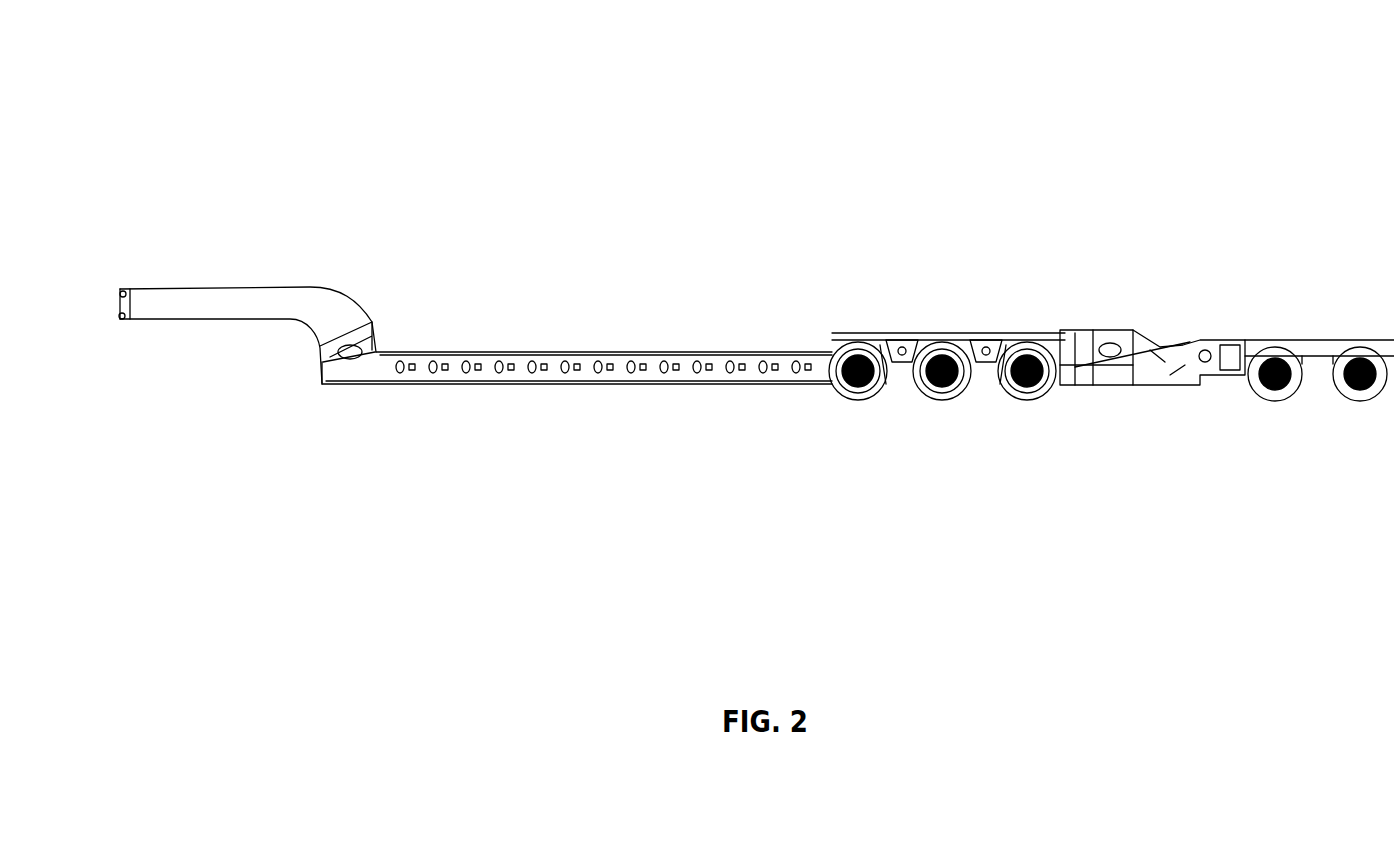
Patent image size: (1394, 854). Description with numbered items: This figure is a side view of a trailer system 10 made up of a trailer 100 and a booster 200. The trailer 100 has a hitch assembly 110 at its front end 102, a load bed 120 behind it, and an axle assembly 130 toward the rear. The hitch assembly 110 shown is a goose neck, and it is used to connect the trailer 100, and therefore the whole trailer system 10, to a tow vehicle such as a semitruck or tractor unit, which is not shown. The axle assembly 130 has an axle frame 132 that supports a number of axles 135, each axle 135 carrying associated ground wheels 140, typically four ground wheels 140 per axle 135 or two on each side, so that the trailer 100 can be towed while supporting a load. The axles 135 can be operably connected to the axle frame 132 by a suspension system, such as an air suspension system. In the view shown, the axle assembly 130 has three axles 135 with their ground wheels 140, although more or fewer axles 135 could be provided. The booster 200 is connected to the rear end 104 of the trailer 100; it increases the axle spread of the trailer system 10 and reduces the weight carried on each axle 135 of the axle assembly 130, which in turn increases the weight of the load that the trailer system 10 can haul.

The trailer system 10 is at (808, 112).
The trailer 100 is at (596, 335).
The front end 102 is at (120, 288).
The rear end 104 is at (1073, 333).
The hitch assembly 110 is at (165, 288).
The load bed 120 is at (720, 352).
The axle assembly 130 is at (850, 205).
The axle frame 132 is at (985, 352).
The axle 135 is at (860, 372).
The ground wheel 140 is at (862, 390).
The booster 200 is at (1297, 325).